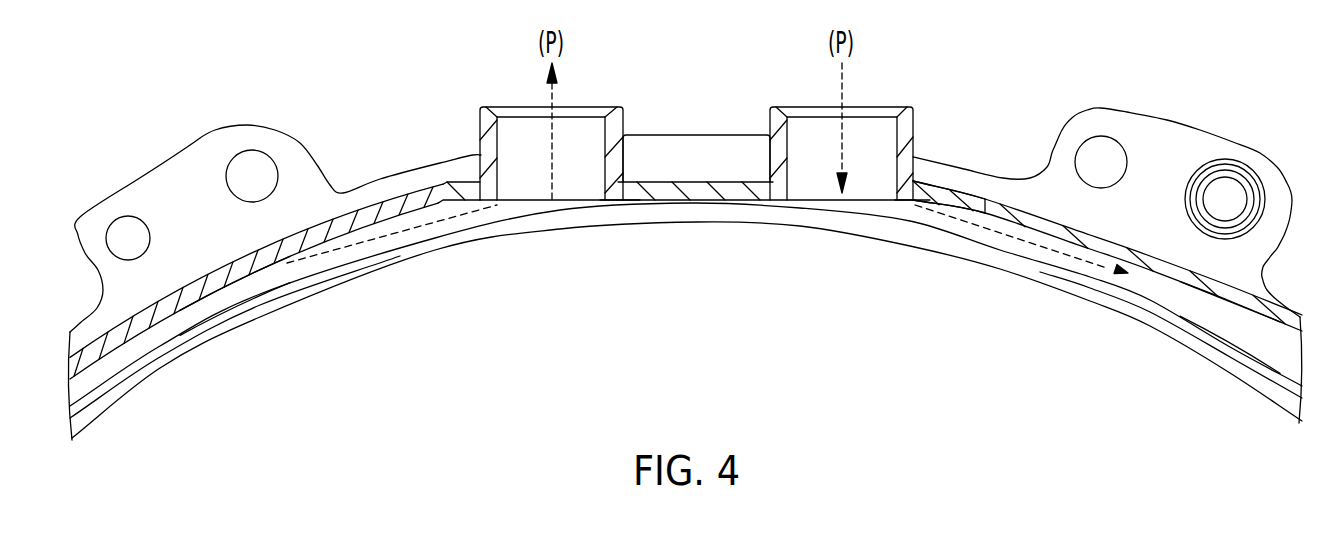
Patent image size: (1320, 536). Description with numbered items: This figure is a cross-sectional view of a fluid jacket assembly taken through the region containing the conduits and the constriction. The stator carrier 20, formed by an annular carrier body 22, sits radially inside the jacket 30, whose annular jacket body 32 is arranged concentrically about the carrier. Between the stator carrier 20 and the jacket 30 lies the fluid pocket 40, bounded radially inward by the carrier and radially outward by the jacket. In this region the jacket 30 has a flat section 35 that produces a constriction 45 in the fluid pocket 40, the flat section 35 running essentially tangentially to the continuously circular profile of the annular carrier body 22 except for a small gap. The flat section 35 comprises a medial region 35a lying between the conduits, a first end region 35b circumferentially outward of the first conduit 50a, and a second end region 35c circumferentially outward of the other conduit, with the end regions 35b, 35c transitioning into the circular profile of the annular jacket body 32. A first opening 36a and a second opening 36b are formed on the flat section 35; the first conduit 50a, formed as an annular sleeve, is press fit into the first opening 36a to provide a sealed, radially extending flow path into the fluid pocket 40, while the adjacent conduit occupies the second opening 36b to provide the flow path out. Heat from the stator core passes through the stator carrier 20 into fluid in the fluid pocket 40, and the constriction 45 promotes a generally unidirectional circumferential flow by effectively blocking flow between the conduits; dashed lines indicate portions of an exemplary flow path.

The stator carrier 20 is at (435, 249).
The annular carrier body 22 is at (373, 253).
The jacket 30 is at (362, 212).
The annular jacket body 32 is at (1193, 295).
The flat section 35 is at (658, 190).
The medial region 35a is at (667, 183).
The first end region 35b is at (418, 200).
The second end region 35c is at (963, 183).
The first opening 36a is at (618, 202).
The second opening 36b is at (910, 202).
The fluid pocket 40 is at (233, 298).
The constriction 45 is at (707, 187).
The first conduit 50a is at (487, 130).